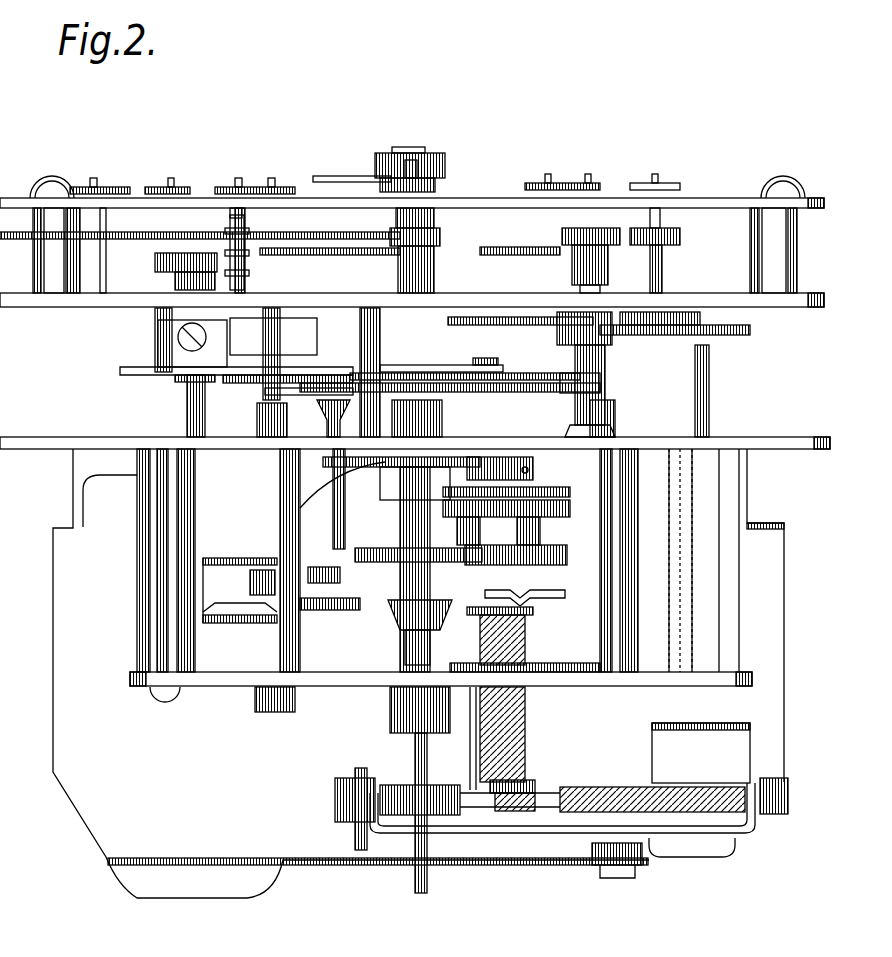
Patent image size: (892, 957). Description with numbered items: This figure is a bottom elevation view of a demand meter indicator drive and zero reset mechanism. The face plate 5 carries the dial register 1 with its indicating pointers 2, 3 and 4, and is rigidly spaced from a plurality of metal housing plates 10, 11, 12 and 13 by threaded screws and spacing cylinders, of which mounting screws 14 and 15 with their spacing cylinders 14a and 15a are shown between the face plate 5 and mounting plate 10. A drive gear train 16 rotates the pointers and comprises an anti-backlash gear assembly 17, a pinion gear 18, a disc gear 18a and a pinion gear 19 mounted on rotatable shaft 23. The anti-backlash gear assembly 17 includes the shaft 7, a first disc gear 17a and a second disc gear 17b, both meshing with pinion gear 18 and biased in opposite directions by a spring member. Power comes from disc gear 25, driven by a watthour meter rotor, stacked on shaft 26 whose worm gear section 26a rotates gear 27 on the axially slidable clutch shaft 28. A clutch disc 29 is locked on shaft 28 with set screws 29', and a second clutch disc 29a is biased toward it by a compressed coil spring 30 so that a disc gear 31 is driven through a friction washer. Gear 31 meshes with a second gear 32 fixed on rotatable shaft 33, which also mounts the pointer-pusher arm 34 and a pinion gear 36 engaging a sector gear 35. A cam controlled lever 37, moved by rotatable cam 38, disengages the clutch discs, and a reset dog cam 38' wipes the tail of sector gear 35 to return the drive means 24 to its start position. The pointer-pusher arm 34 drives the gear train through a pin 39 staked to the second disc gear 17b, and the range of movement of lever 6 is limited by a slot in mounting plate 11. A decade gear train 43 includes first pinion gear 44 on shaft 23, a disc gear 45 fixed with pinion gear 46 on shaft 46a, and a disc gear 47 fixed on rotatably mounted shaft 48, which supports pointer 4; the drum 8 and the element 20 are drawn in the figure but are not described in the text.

The dial register 1 is at (233, 152).
The indicating pointer 2 is at (598, 178).
The indicating pointer 3 is at (440, 196).
The indicating pointer 4 is at (250, 186).
The face plate 5 is at (718, 198).
The lever 6 is at (340, 176).
The shaft 7 is at (404, 147).
The drum 8 is at (418, 172).
The mounting plate 10 is at (808, 293).
The mounting plate 11 is at (804, 450).
The housing plate 12 is at (724, 694).
The housing plate 13 is at (760, 840).
The mounting screw 14 is at (786, 176).
The spacing cylinder 14a is at (785, 264).
The mounting screw 15 is at (48, 178).
The spacing cylinder 15a is at (70, 264).
The drive gear train 16 is at (496, 362).
The anti-backlash gear assembly 17 is at (515, 414).
The first disc gear 17a is at (523, 381).
The second disc gear 17b is at (560, 406).
The pinion gear 18 is at (618, 380).
The disc gear 18a is at (465, 317).
The pinion gear 19 is at (600, 328).
The shaft 20 is at (388, 226).
The rotatable shaft 23 is at (605, 410).
The drive means 24 is at (377, 492).
The disc gear 25 is at (428, 888).
The shaft 26 is at (392, 790).
The worm gear section 26a is at (545, 787).
The gear 27 is at (526, 812).
The clutch shaft 28 is at (525, 656).
The clutch disc 29 is at (555, 507).
The set screws 29' is at (525, 466).
The second clutch disc 29a is at (516, 524).
The compressed coil spring 30 is at (526, 629).
The disc gear 31 is at (556, 565).
The second gear 32 is at (358, 548).
The rotatable shaft 33 is at (410, 520).
The pointer-pusher arm 34 is at (370, 490).
The sector gear 35 is at (358, 602).
The pinion gear 36 is at (388, 602).
The cam controlled lever 37 is at (522, 597).
The rotatable cam 38 is at (240, 618).
The reset dog cam 38' is at (251, 555).
The pin 39 is at (365, 460).
The decade gear train 43 is at (340, 255).
The first pinion gear 44 is at (598, 243).
The disc gear 45 is at (495, 250).
The pinion gear 46 is at (432, 232).
The shaft 46a is at (440, 226).
The disc gear 47 is at (300, 232).
The rotatably mounted shaft 48 is at (230, 228).